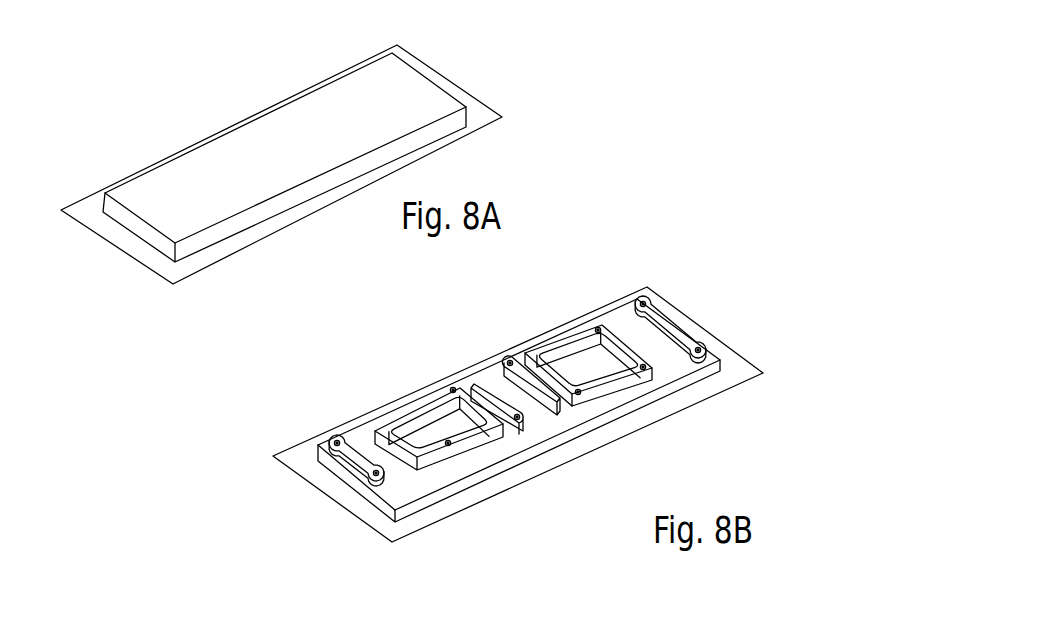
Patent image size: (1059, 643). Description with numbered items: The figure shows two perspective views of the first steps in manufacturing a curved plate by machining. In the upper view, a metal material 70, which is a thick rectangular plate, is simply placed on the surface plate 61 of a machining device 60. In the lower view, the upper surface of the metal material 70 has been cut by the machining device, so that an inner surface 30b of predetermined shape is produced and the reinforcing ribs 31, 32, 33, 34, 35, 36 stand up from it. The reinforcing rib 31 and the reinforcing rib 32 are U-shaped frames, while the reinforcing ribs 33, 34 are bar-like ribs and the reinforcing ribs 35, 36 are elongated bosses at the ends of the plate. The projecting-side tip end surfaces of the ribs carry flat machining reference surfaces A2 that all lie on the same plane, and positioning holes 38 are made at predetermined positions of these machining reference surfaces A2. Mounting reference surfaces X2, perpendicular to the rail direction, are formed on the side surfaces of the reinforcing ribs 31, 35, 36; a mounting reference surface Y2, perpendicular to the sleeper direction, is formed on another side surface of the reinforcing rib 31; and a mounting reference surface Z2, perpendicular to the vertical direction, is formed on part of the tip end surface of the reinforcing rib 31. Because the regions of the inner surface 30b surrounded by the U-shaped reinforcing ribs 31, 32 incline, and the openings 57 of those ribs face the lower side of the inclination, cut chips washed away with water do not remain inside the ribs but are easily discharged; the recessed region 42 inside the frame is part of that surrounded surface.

In FIG. 8A, the machining device 60 is at (293, 150).
In FIG. 8A, the surface plate 61 is at (500, 116).
In FIG. 8B, the surface plate 61 is at (746, 354).
In FIG. 8A, the metal material 70 is at (332, 98).
In FIG. 8B, the inner surface 30b is at (623, 323).
In FIG. 8B, the reinforcing rib 31 is at (394, 430).
In FIG. 8B, the reinforcing rib 32 is at (614, 390).
In FIG. 8B, the reinforcing rib 33 is at (490, 382).
In FIG. 8B, the reinforcing rib 34 is at (557, 393).
In FIG. 8B, the reinforcing rib 35 is at (688, 330).
In FIG. 8B, the reinforcing rib 36 is at (358, 456).
In FIG. 8B, the positioning hole 38 is at (652, 374).
In FIG. 8B, the inner bottom of frame 42 is at (424, 442).
In FIG. 8B, the opening 57 is at (523, 407).
In FIG. 8B, the mounting reference surface X2 is at (668, 318).
In FIG. 8B, the mounting reference surface Y2 is at (408, 418).
In FIG. 8B, the mounting reference surface Z2 is at (385, 462).
In FIG. 8B, the machining reference surface A2 is at (427, 412).